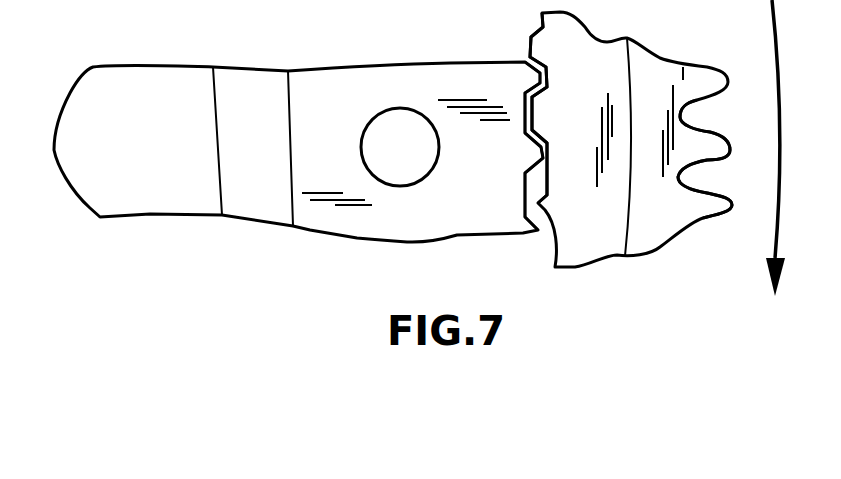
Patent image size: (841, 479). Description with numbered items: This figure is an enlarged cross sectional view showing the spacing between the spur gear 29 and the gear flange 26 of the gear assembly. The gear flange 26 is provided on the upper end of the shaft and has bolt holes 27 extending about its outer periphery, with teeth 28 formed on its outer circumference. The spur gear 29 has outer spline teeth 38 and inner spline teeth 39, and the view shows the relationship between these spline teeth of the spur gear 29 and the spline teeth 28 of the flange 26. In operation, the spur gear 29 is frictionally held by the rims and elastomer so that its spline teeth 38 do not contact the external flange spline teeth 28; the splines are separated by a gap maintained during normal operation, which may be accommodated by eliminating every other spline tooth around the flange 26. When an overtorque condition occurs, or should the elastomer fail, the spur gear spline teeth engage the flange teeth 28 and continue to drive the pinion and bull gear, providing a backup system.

The gear flange 26 is at (352, 220).
The bolt holes 27 is at (397, 112).
The teeth 28 is at (535, 232).
The spur gear 29 is at (612, 235).
The outer spline teeth 38 is at (553, 267).
The inner spline teeth 39 is at (712, 208).